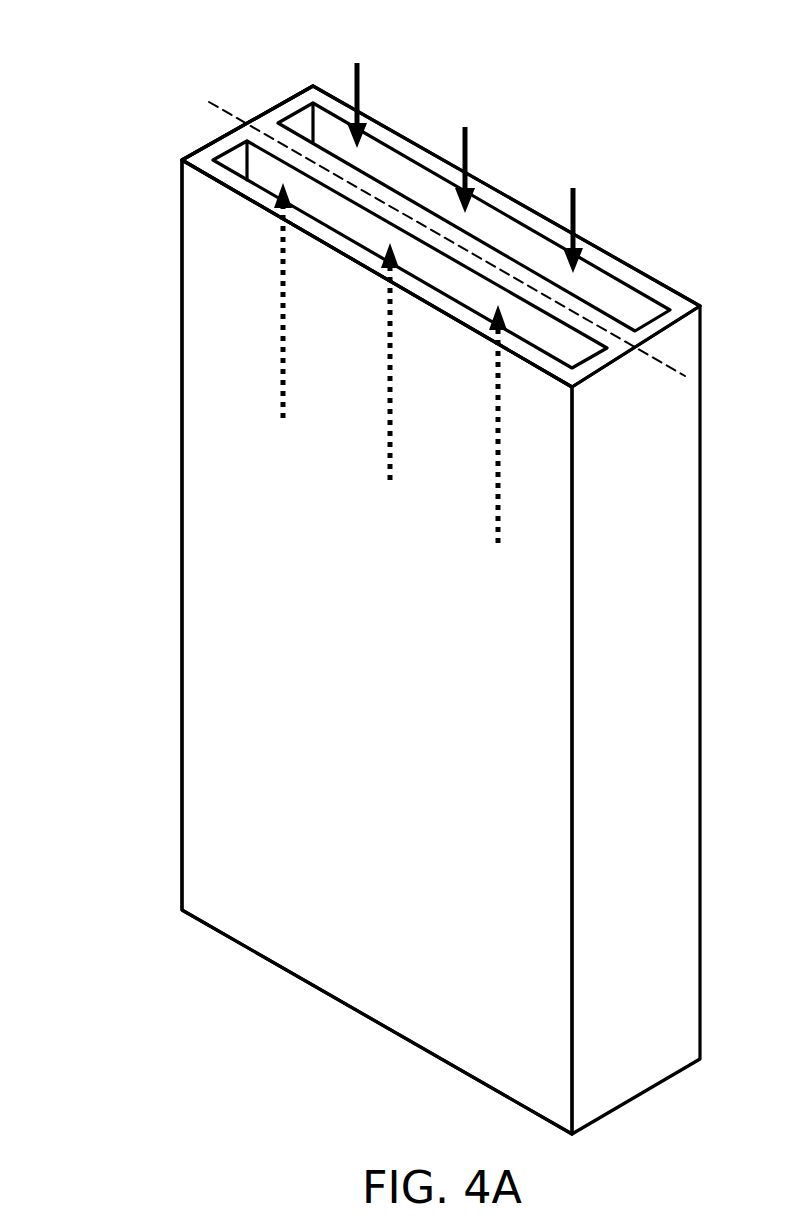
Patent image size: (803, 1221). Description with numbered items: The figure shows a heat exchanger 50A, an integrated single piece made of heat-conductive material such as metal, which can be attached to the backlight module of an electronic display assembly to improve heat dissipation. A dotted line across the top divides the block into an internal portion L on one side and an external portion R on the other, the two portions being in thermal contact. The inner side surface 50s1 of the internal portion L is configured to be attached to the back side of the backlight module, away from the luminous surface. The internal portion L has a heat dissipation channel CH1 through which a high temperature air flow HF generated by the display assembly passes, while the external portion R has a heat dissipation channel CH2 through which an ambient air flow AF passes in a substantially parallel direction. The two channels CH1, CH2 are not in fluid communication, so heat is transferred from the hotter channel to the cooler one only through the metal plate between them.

The heat exchanger 50A is at (84, 25).
The external portion R is at (302, 100).
The internal portion L is at (192, 158).
The heat dissipation channel CH1 is at (508, 310).
The heat dissipation channel CH2 is at (645, 308).
The ambient air flow AF is at (465, 168).
The high temperature air flow HF is at (283, 263).
The inner side surface 50s1 is at (192, 427).